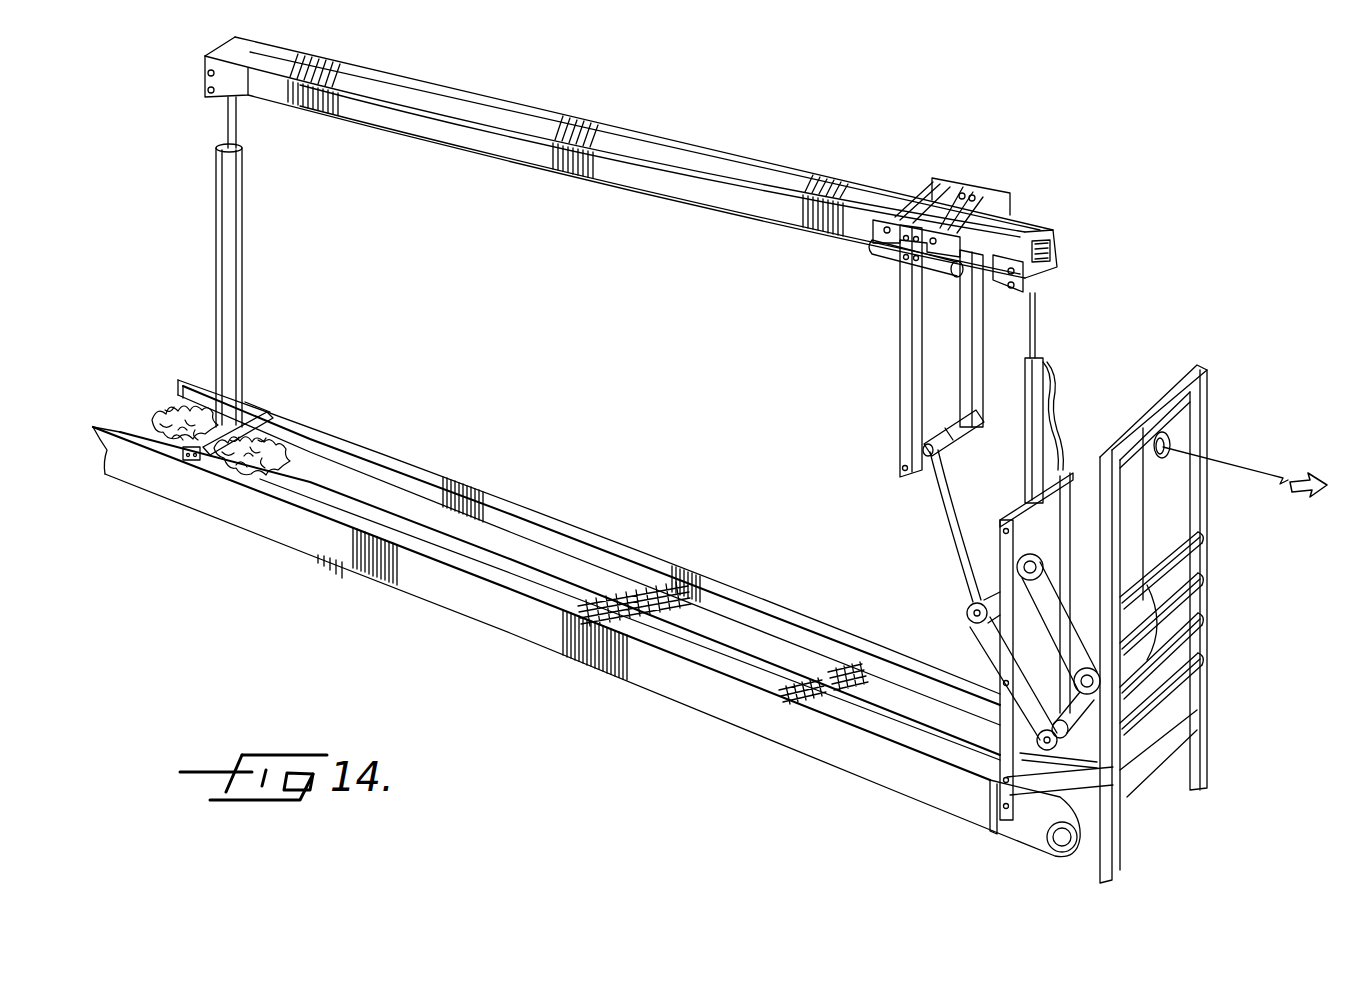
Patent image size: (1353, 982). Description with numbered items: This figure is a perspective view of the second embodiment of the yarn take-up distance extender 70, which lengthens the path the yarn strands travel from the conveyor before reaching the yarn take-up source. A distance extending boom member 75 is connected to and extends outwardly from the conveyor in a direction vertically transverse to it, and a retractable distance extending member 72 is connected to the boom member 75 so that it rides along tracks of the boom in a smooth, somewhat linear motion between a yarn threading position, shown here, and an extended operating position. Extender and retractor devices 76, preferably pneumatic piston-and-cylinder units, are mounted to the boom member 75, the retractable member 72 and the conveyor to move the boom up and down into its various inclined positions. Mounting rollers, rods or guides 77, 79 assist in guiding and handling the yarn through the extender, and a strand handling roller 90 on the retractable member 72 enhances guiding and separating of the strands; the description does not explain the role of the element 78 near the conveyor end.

The yarn take-up distance extender 70 is at (1128, 146).
The retractable distance extending member 72 is at (900, 345).
The distance extending boom member 75 is at (722, 158).
The extender and retractor devices 76 is at (243, 278).
The mounting rollers or mounting rods or guides 77 is at (1193, 670).
The lever arm 78 is at (1004, 548).
The mounting rollers or mounting rods or guides 79 is at (1173, 433).
The strand handling roller 90 is at (963, 433).